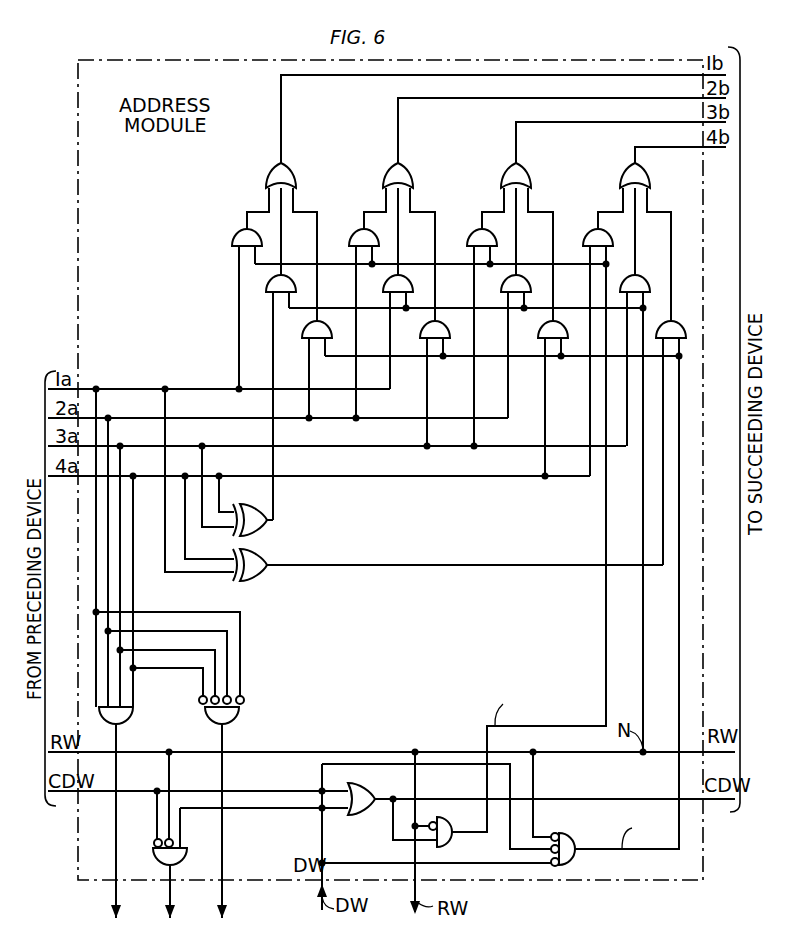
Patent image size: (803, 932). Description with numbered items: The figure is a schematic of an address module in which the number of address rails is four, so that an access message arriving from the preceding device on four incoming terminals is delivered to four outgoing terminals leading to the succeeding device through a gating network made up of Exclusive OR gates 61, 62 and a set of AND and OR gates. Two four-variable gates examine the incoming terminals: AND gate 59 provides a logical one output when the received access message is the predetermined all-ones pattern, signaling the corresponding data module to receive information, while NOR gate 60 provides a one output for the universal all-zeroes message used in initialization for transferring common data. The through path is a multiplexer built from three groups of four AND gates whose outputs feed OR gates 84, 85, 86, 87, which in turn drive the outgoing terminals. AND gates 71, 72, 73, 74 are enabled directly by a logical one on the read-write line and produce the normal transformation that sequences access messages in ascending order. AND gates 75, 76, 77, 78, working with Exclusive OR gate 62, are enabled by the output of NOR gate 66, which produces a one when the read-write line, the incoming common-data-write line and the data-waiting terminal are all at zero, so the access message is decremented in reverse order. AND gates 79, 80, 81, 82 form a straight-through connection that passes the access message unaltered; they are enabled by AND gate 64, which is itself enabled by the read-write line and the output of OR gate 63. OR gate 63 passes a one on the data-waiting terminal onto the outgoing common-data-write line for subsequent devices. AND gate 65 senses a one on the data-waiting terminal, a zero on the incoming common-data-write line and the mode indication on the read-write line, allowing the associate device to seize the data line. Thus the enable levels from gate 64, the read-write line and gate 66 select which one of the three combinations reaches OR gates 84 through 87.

The AND gate 59 is at (127, 719).
The NOR gate 60 is at (233, 719).
The Exclusive OR gate 61 is at (260, 530).
The Exclusive OR gate 62 is at (260, 576).
The OR gate 63 is at (357, 787).
The AND gate 64 is at (446, 823).
The AND gate 65 is at (183, 860).
The NOR gate 66 is at (565, 834).
The AND gate 71 is at (272, 286).
The AND gate 72 is at (389, 286).
The AND gate 73 is at (507, 286).
The AND gate 74 is at (642, 279).
The AND gate 75 is at (308, 333).
The AND gate 76 is at (426, 333).
The AND gate 77 is at (544, 333).
The AND gate 78 is at (678, 326).
The AND gate 79 is at (238, 235).
The AND gate 80 is at (355, 235).
The AND gate 81 is at (473, 235).
The AND gate 82 is at (589, 235).
The OR gate 84 is at (291, 172).
The OR gate 85 is at (408, 172).
The OR gate 86 is at (526, 172).
The OR gate 87 is at (644, 170).